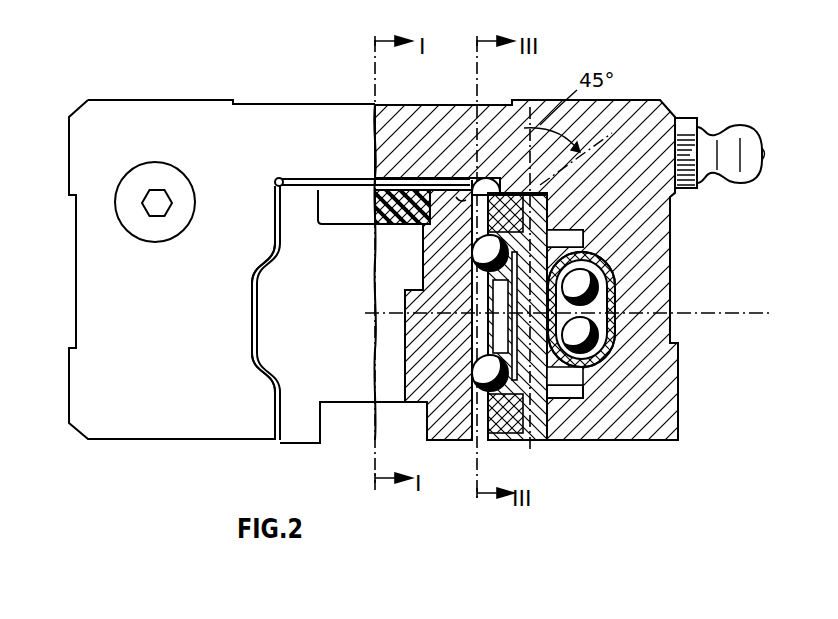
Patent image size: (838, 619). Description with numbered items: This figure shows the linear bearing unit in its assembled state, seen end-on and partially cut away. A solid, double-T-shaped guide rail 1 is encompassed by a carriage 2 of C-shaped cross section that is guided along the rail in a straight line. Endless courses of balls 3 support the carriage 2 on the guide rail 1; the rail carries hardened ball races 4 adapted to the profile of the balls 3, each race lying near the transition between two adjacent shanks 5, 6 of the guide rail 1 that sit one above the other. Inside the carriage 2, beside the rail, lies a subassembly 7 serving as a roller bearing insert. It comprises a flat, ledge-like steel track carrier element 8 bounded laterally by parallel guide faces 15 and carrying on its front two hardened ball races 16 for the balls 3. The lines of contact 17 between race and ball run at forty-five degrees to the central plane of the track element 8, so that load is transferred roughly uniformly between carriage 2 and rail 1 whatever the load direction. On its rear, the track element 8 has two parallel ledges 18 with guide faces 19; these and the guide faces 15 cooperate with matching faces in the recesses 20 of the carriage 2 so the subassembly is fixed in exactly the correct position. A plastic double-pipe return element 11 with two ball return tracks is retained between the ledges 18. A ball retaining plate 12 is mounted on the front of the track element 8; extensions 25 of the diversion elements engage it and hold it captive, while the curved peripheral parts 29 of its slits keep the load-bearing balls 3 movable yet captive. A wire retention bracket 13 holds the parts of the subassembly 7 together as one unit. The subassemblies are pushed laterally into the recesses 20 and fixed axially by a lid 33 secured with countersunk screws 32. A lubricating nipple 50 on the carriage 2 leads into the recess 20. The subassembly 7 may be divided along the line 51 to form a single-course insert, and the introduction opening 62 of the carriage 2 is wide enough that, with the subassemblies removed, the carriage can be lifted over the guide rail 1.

The guide rail 1 is at (303, 425).
The carriage 2 is at (188, 442).
The balls 3 is at (279, 256).
The ball races 4 is at (440, 277).
The shank 5 is at (459, 200).
The shank 6 is at (275, 300).
The subassembly 7 is at (516, 445).
The track carrier element 8 is at (500, 420).
The return element 11 is at (613, 275).
The ball retaining plate 12 is at (480, 437).
The retention bracket 13 is at (613, 322).
The guide faces 15 is at (513, 173).
The ball races 16 is at (537, 223).
The lines of contact 17 is at (377, 338).
The ledges 18 is at (570, 230).
The guide faces 19 is at (620, 430).
The recesses 20 is at (670, 212).
The extensions 25 is at (481, 203).
The peripheral parts 29 is at (460, 203).
The countersunk screws 32 is at (133, 180).
The lid 33 is at (85, 398).
The lubricating nipple 50 is at (750, 142).
The dividing line 51 is at (757, 312).
The introduction opening 62 is at (540, 437).